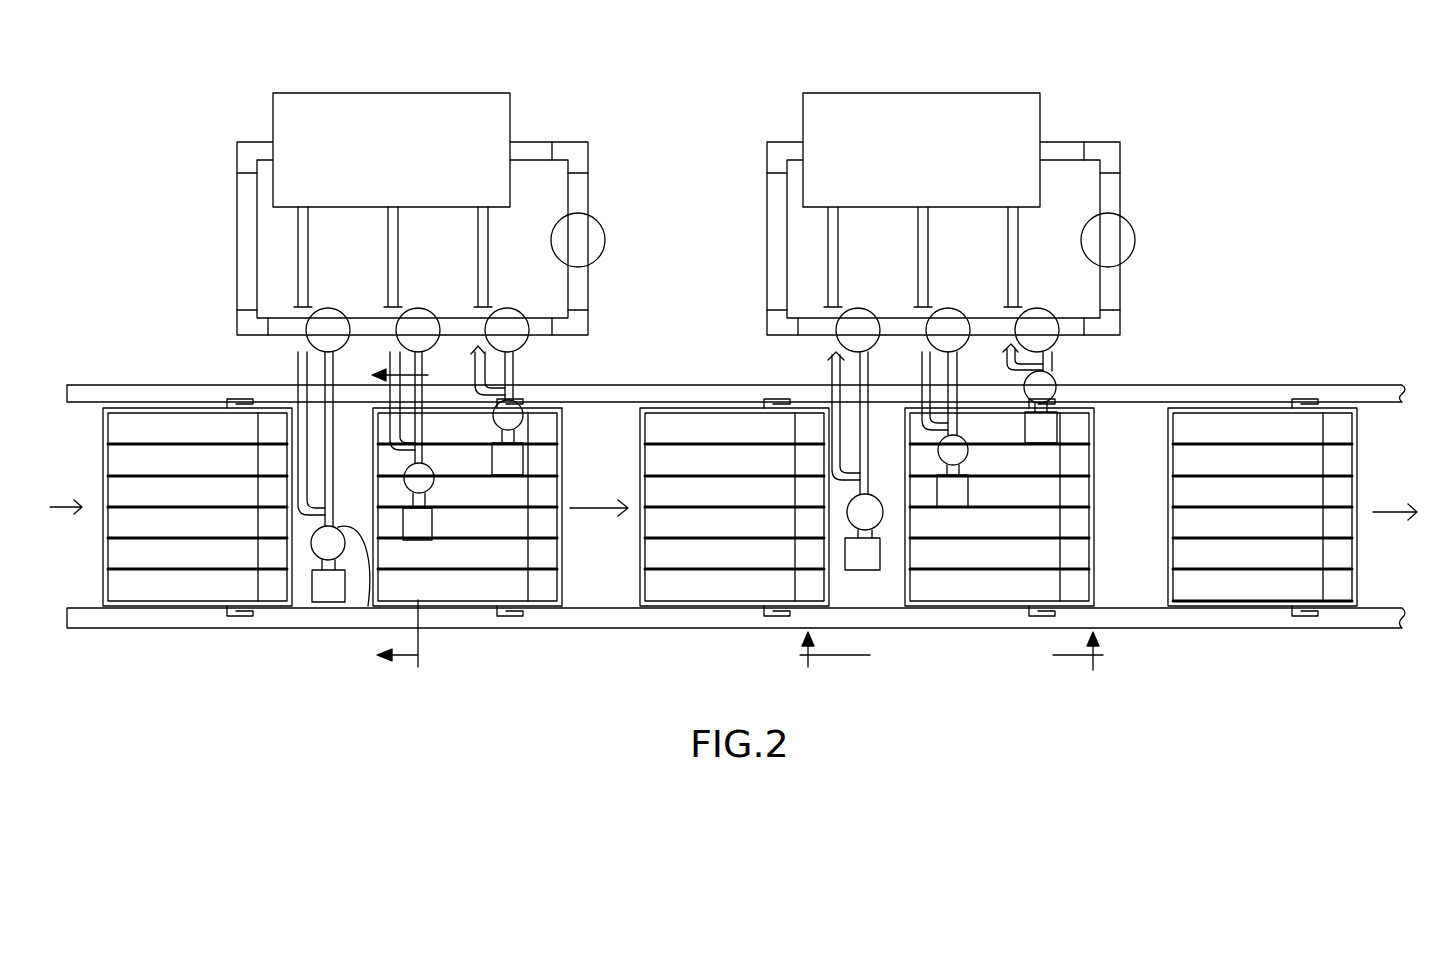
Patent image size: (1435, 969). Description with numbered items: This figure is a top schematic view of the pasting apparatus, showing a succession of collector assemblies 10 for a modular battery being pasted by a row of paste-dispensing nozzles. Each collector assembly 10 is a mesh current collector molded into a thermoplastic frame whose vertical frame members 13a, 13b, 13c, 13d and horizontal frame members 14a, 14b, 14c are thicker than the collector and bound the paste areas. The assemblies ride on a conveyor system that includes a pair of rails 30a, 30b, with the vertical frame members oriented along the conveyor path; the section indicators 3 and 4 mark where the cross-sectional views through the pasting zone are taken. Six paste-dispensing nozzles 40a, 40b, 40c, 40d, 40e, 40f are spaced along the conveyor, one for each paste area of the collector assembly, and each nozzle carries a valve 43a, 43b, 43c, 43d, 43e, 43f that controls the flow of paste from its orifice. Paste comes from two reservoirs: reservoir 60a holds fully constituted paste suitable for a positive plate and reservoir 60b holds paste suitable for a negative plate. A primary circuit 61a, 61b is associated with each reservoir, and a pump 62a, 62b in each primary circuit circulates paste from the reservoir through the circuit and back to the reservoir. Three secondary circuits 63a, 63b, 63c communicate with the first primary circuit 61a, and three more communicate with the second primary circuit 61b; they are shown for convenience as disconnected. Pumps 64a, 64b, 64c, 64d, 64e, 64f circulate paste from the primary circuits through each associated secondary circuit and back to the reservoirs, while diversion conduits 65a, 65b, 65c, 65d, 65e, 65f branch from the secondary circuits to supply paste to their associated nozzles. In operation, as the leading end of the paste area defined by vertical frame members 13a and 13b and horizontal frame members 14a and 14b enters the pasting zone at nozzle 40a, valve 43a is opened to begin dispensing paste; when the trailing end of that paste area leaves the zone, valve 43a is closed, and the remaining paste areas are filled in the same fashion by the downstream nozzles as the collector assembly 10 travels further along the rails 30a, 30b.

The collector assembly 10 is at (747, 521).
The vertical frame member 13a is at (1293, 605).
The vertical frame member 13b is at (1307, 570).
The vertical frame member 13c is at (1308, 542).
The vertical frame member 13d is at (1315, 510).
The horizontal frame member 14a is at (193, 510).
The horizontal frame member 14b is at (253, 555).
The horizontal frame member 14c is at (288, 428).
The rail 30a is at (1367, 392).
The rail 30b is at (1275, 623).
The paste-dispensing nozzle 40a is at (333, 588).
The paste-dispensing nozzle 40b is at (422, 523).
The paste-dispensing nozzle 40c is at (510, 460).
The paste-dispensing nozzle 40d is at (866, 570).
The paste-dispensing nozzle 40e is at (958, 495).
The paste-dispensing nozzle 40f is at (1047, 430).
The valve 43a is at (322, 550).
The valve 43b is at (425, 483).
The valve 43c is at (513, 410).
The valve 43d is at (880, 522).
The valve 43e is at (958, 453).
The valve 43f is at (1058, 385).
The reservoir 60a is at (383, 110).
The reservoir 60b is at (953, 110).
The primary circuit 61a is at (542, 148).
The primary circuit 61b is at (1075, 150).
The pump 62a is at (592, 230).
The pump 62b is at (1122, 230).
The secondary circuit 63a is at (308, 232).
The secondary circuit 63b is at (398, 242).
The secondary circuit 63c is at (488, 242).
The pump 64a is at (330, 313).
The pump 64b is at (418, 313).
The pump 64c is at (510, 313).
The pump 64d is at (865, 313).
The pump 64e is at (953, 313).
The pump 64f is at (1040, 313).
The diversion conduit 65a is at (368, 606).
The diversion conduit 65b is at (430, 487).
The diversion conduit 65c is at (512, 392).
The diversion conduit 65d is at (870, 490).
The diversion conduit 65e is at (970, 420).
The diversion conduit 65f is at (1043, 365).
The section line 3- 3 is at (950, 667).
The section line 4- 4 is at (410, 515).